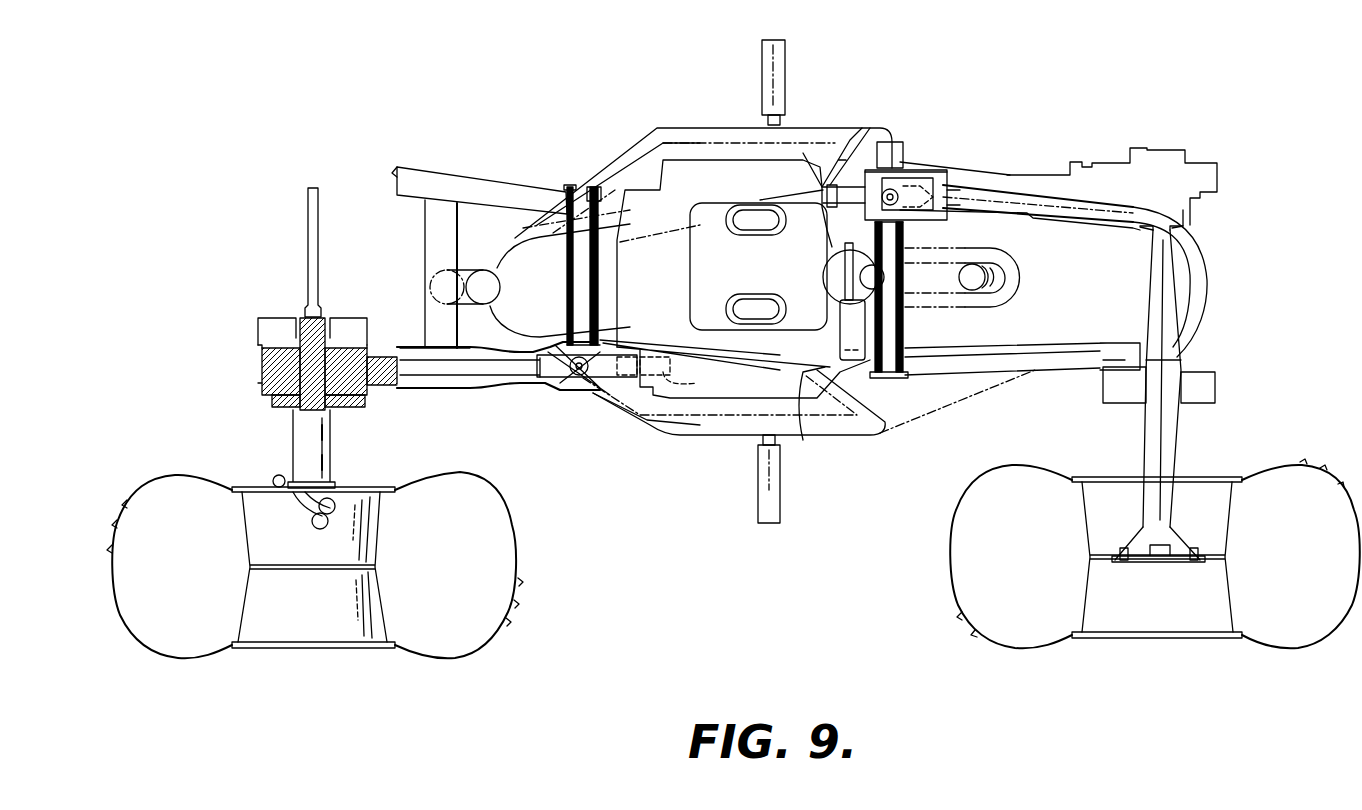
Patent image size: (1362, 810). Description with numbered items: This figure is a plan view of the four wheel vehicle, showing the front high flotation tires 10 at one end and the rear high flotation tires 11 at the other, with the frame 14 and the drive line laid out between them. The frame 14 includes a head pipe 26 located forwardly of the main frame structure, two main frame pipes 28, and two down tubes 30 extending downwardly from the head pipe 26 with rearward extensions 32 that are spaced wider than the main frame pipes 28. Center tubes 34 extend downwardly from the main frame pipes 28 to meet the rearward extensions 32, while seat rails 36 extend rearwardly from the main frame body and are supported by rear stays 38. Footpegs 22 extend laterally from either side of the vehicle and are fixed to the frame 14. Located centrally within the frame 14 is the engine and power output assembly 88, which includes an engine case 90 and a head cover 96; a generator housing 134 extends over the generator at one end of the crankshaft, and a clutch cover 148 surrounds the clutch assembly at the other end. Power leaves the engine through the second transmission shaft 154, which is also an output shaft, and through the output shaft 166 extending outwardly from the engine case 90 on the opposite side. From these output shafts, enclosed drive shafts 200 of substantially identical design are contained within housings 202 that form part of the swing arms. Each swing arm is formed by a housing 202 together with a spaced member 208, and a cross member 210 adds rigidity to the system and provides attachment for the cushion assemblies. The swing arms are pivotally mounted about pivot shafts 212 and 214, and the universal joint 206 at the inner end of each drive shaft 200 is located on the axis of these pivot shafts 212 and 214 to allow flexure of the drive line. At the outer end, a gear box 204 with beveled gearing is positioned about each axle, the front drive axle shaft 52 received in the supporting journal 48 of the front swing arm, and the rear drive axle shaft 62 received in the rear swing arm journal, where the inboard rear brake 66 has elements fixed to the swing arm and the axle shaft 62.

The high flotation tires 10 is at (498, 502).
The high flotation tires 11 is at (1297, 468).
The frame 14 is at (862, 432).
The footpegs 22 is at (760, 505).
The head pipe 26 is at (462, 278).
The main frame pipes 28 is at (645, 215).
The down tubes 30 is at (600, 168).
The rearward extensions 32 is at (728, 115).
The center tubes 34 is at (843, 140).
The seat rails 36 is at (1010, 392).
The rear stays 38 is at (915, 155).
The supporting journal 48 is at (300, 440).
The drive axle shaft 52 is at (308, 218).
The rear drive axle shaft 62 is at (1172, 468).
The rear brake 66 is at (1215, 388).
The engine and power output assembly 88 is at (698, 398).
The engine case 90 is at (790, 385).
The head cover 96 is at (700, 268).
The generator housing 134 is at (845, 245).
The clutch cover 148 is at (658, 128).
The second transmission shaft 154 is at (812, 186).
The output shaft 166 is at (680, 380).
The drive shafts 200 is at (494, 370).
The housings 202 is at (440, 392).
The gear box 204 is at (262, 388).
The universal joint 206 is at (565, 385).
The spaced member 208 is at (470, 186).
The cross member 210 is at (432, 226).
The pivot shaft 212 is at (605, 186).
The pivot shaft 214 is at (905, 335).